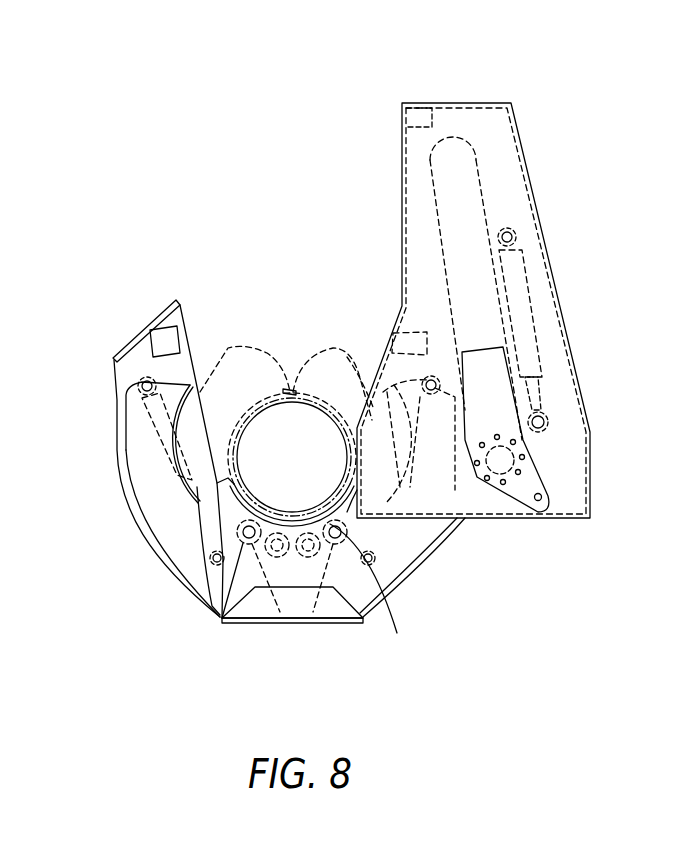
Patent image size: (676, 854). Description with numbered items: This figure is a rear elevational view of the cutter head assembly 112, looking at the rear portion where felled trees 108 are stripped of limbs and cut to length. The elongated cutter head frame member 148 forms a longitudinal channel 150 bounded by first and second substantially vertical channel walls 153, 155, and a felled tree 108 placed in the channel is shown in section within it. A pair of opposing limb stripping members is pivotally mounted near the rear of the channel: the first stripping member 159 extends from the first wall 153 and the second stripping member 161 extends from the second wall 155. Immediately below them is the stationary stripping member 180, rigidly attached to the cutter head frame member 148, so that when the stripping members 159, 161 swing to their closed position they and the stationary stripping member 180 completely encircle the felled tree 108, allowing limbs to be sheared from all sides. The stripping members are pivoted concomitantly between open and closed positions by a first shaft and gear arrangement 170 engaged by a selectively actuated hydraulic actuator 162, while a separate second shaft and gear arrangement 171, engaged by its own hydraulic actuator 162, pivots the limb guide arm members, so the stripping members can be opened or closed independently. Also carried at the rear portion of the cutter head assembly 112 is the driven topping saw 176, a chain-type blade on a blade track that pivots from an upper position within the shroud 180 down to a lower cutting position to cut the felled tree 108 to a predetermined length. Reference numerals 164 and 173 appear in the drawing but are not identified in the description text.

The felled trees 108 is at (283, 437).
The cutter head assembly 112 is at (115, 376).
The cutter head frame member 148 is at (167, 340).
The longitudinal channel 150 is at (291, 330).
The first channel wall 153 is at (195, 390).
The second channel wall 155 is at (353, 353).
The first stripping member 159 is at (162, 530).
The second stripping member 161 is at (417, 543).
The selectively actuated hydraulic actuator 162 is at (150, 410).
The arm linkage 164 is at (373, 591).
The first shaft and gear arrangement 170 is at (275, 557).
The second shaft and gear arrangement 171 is at (220, 618).
The bolt 173 is at (311, 557).
The topping saw 176 is at (438, 175).
The stationary stripping member 180 is at (472, 112).